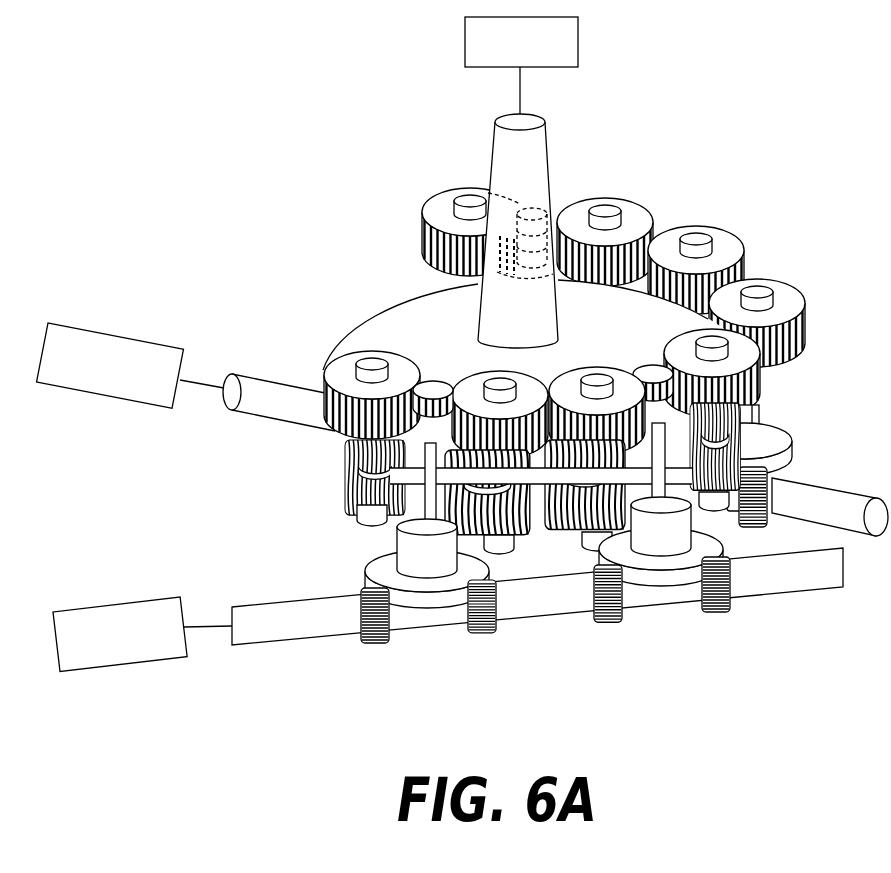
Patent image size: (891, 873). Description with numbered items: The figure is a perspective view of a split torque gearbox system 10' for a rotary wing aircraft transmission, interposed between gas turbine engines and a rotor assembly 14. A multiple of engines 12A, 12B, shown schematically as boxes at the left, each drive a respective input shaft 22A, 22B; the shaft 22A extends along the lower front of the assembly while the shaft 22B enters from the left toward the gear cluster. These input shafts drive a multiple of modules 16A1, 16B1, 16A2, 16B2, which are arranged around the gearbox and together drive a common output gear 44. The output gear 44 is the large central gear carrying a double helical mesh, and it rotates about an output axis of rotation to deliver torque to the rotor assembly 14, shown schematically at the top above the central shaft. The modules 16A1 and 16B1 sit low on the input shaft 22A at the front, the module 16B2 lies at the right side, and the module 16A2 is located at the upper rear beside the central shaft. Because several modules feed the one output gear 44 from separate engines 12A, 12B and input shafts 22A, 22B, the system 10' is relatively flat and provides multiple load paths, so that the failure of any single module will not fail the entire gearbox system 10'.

The rotor assembly 14 is at (578, 48).
The split torque gearbox system 10' is at (572, 305).
The module 16A2 is at (558, 215).
The output gear 44 is at (540, 368).
The input shaft 22B is at (260, 392).
The engine 12B is at (130, 390).
The module 16B2 is at (775, 417).
The module 16A1 is at (365, 547).
The module 16B1 is at (640, 540).
The input shaft 22A is at (278, 625).
The engine 12A is at (102, 653).